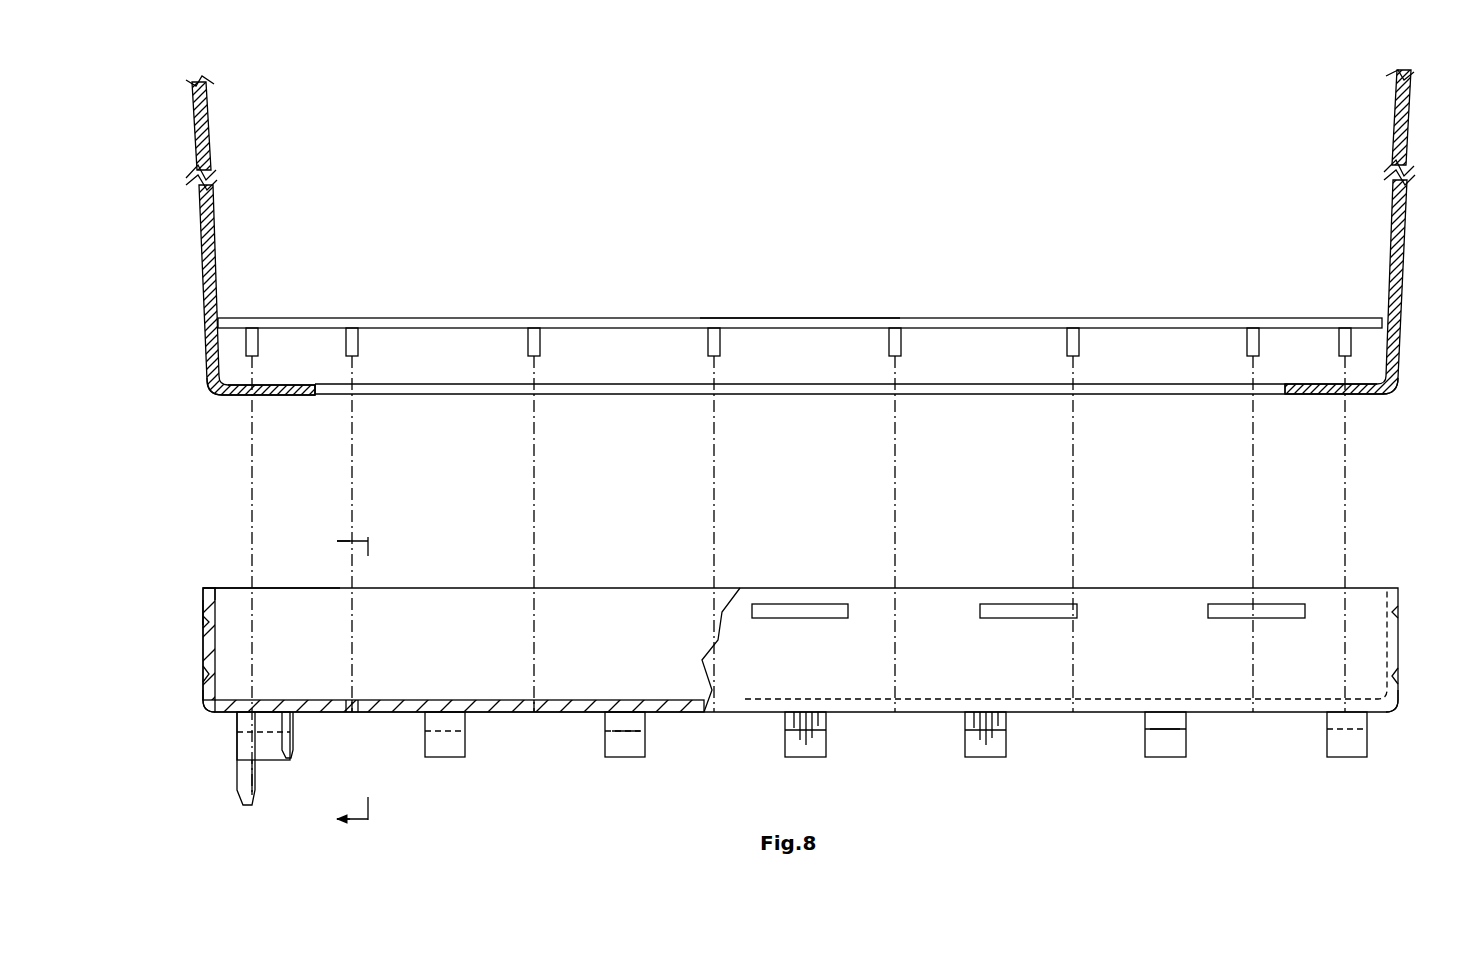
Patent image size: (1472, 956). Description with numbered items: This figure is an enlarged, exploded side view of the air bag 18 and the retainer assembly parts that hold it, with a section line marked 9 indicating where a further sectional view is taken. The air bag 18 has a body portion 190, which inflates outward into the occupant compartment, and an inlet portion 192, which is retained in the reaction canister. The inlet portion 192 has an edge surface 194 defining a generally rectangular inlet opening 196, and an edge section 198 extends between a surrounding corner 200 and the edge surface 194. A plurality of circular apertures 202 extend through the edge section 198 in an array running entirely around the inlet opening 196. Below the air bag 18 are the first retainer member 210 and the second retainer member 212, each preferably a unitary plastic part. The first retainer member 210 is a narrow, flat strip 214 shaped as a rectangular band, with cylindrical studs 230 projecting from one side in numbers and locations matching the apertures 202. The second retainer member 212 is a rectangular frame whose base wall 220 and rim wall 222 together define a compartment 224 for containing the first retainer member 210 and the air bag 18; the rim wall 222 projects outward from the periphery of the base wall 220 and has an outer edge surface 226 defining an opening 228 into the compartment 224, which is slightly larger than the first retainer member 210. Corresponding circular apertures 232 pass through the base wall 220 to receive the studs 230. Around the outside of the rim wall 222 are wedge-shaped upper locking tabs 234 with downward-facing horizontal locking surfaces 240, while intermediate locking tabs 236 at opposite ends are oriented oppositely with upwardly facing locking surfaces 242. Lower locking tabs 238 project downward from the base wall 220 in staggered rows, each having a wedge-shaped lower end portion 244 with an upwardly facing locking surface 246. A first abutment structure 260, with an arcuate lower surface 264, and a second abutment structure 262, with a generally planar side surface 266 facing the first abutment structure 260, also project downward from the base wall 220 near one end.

The air bag 18 is at (771, 214).
The body portion 190 is at (197, 145).
The inlet portion 192 is at (202, 252).
The edge surface 194 is at (318, 397).
The inlet opening 196 is at (461, 396).
The edge section 198 is at (277, 390).
The surrounding corner 200 is at (212, 393).
The circular apertures 202 is at (250, 397).
The first retainer member 210 is at (622, 316).
The second retainer member 212 is at (568, 585).
The strip 214 is at (798, 326).
The base wall 220 is at (330, 700).
The rim wall 222 is at (220, 619).
The compartment 224 is at (647, 649).
The outer edge surface 226 is at (208, 585).
The opening 228 is at (233, 585).
The cylindrical studs 230 is at (527, 345).
The circular apertures 232 is at (530, 697).
The upper locking tabs 234 is at (203, 613).
The intermediate locking tabs 236 is at (203, 690).
The lower locking tabs 238 is at (645, 743).
The locking surfaces 240 is at (203, 626).
The locking surfaces 242 is at (203, 678).
The lower end portion 244 is at (622, 745).
The locking surface 246 is at (606, 716).
The first abutment structure 260 is at (290, 758).
The second abutment structure 262 is at (240, 775).
The arcuate lower surface 264 is at (295, 725).
The side surface 266 is at (253, 787).
The section line 9 is at (340, 680).